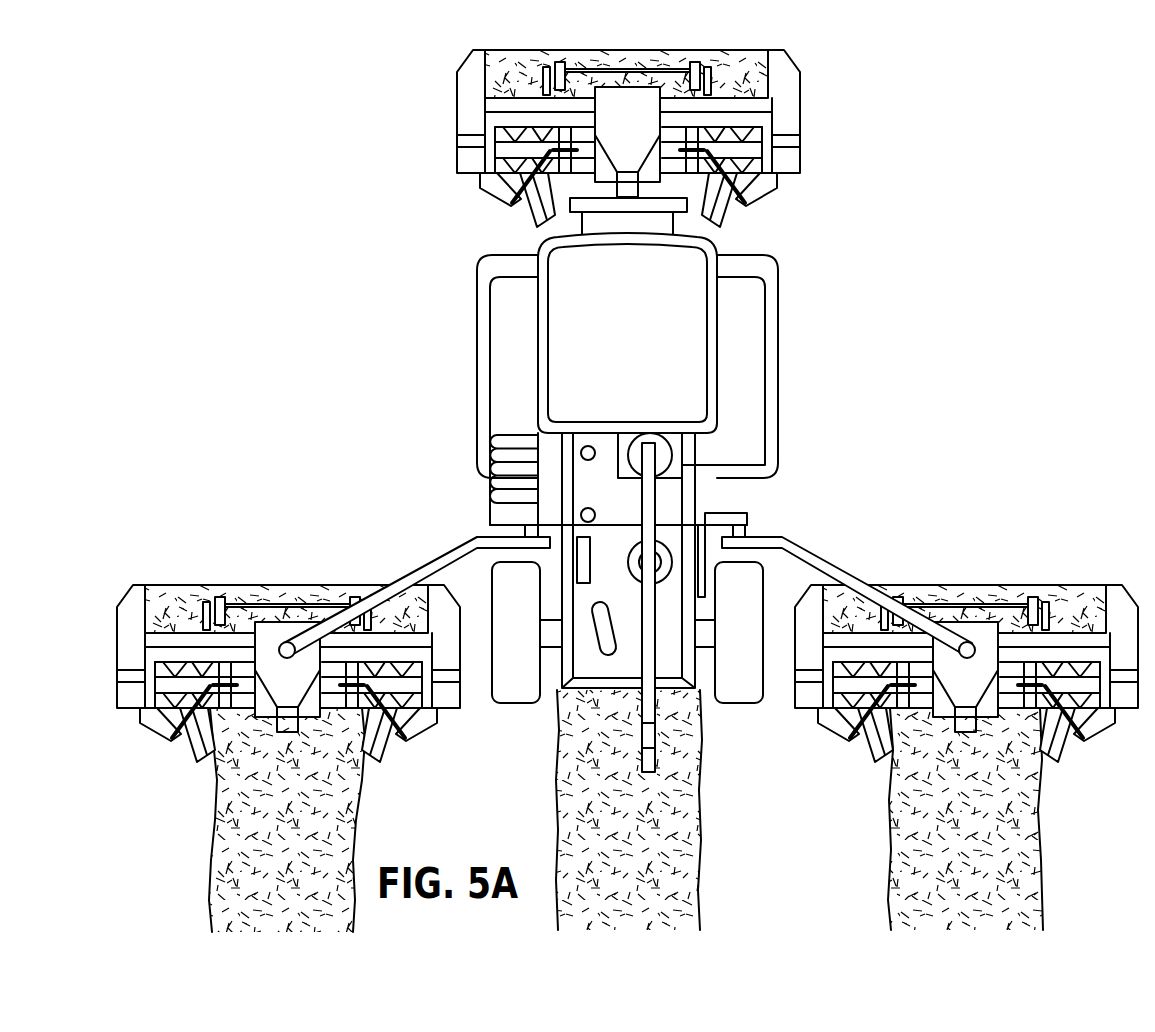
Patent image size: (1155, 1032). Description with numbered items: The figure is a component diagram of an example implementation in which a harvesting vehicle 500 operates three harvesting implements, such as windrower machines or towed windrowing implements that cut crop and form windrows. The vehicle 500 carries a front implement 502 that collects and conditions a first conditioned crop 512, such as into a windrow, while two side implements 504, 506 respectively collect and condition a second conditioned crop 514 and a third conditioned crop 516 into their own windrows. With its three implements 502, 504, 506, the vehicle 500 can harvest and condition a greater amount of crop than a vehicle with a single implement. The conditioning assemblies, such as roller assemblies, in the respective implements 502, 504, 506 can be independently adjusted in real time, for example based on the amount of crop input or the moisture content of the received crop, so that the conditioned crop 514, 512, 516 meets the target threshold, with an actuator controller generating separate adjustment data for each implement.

The harvesting vehicle 500 is at (796, 46).
The front implement 502 is at (488, 73).
The side implement 504 is at (212, 586).
The side implement 506 is at (1000, 586).
The first conditioned crop 512 is at (608, 798).
The second conditioned crop 514 is at (266, 819).
The third conditioned crop 516 is at (945, 815).